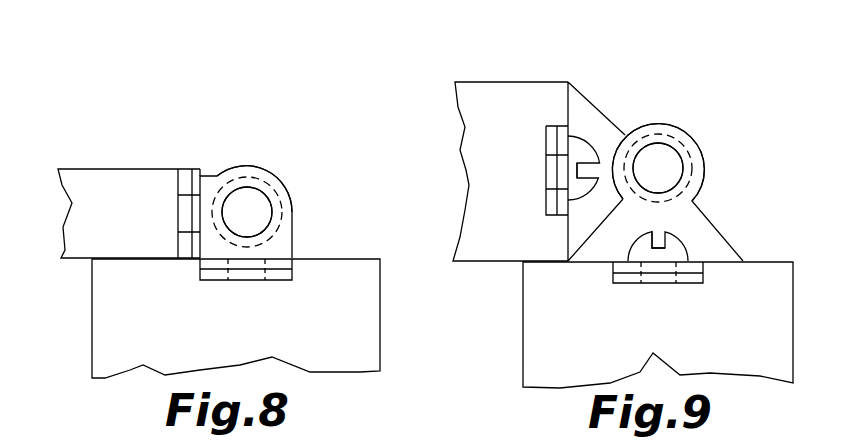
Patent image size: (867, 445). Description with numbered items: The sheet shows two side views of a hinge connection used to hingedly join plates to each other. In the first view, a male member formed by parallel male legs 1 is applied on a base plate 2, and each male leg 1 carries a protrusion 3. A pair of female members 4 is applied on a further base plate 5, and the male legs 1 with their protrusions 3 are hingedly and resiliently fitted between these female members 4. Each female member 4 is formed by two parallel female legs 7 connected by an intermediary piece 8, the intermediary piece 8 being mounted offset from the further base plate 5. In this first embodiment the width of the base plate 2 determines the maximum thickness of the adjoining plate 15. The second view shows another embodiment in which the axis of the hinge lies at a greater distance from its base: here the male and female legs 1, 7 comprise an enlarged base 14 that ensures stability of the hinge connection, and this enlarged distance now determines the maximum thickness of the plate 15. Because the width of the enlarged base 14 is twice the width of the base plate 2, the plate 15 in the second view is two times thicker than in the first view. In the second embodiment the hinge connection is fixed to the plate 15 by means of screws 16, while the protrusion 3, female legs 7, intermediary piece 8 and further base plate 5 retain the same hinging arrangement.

In FIG. 8, the male leg 1 is at (212, 182).
In FIG. 9, the male leg 1 is at (608, 135).
In FIG. 8, the base plate 2 is at (197, 170).
In FIG. 9, the base plate 2 is at (575, 147).
In FIG. 8, the protrusion 3 is at (240, 205).
In FIG. 9, the protrusion 3 is at (655, 162).
In FIG. 8, the female member 4 is at (288, 180).
In FIG. 9, the female member 4 is at (705, 176).
In FIG. 8, the further base plate 5 is at (278, 263).
In FIG. 9, the further base plate 5 is at (692, 264).
In FIG. 8, the female leg 7 is at (287, 210).
In FIG. 9, the female leg 7 is at (703, 160).
In FIG. 8, the intermediary piece 8 is at (258, 180).
In FIG. 9, the intermediary piece 8 is at (683, 152).
In FIG. 9, the enlarged base 14 is at (566, 133).
In FIG. 8, the plate 15 is at (137, 187).
In FIG. 9, the plate 15 is at (497, 120).
In FIG. 9, the screw 16 is at (585, 142).